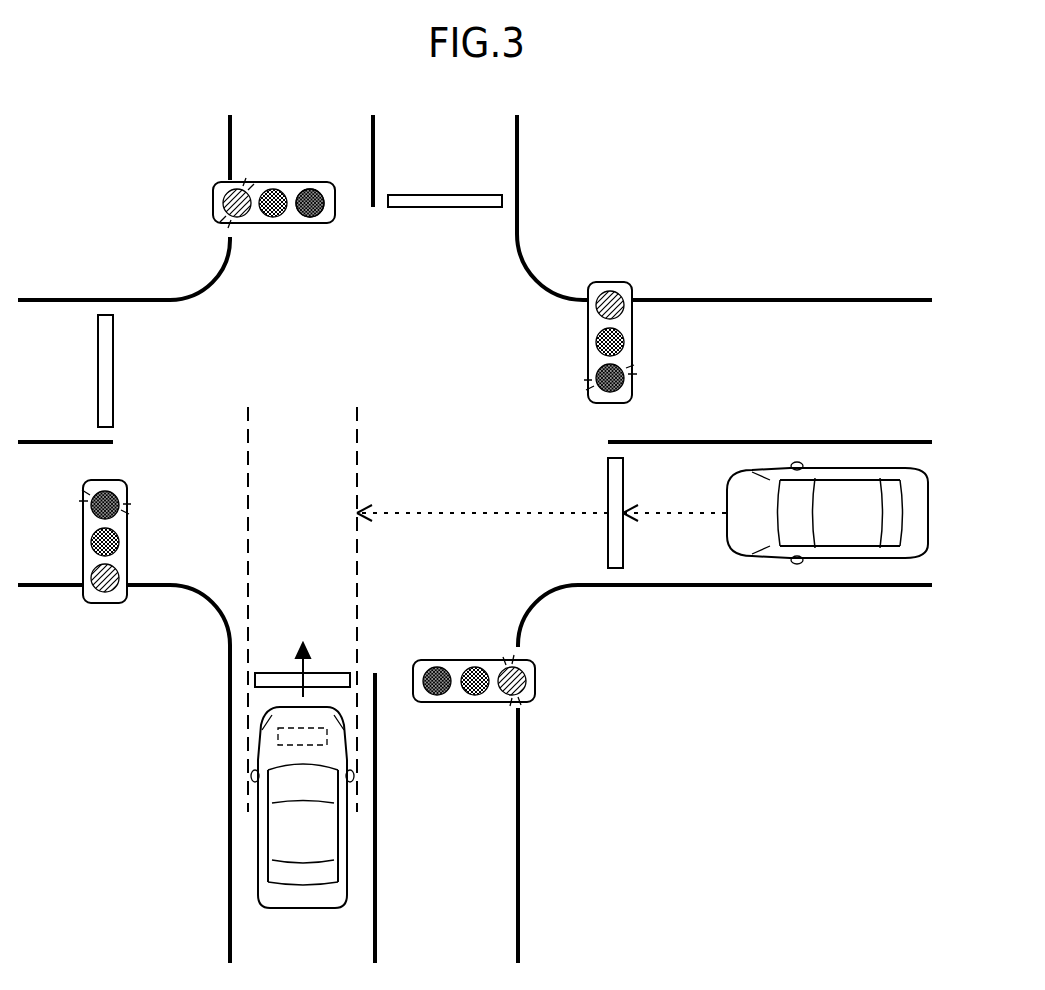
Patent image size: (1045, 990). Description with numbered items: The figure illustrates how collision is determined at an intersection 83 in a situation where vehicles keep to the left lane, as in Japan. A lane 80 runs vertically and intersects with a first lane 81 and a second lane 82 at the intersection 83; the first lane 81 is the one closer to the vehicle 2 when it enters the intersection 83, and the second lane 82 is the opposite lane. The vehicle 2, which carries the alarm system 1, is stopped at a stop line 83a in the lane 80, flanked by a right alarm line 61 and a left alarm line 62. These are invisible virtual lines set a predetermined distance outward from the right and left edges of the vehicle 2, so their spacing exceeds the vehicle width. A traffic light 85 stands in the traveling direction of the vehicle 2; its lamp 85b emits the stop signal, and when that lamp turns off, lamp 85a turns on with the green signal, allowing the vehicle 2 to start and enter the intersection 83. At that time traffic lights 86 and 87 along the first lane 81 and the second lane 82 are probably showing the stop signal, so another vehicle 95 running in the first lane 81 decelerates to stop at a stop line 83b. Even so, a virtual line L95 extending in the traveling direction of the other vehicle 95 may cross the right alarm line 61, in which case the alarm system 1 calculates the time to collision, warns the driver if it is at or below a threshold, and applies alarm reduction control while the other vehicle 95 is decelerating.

The alarm system 1 is at (278, 733).
The vehicle 2 is at (258, 825).
The right alarm line 61 is at (357, 595).
The left alarm line 62 is at (246, 620).
The lane 80 is at (265, 950).
The first lane 81 is at (912, 585).
The second lane 82 is at (822, 330).
The intersection 83 is at (432, 392).
The stop line 83a is at (268, 687).
The stop line 83b is at (623, 552).
The traffic light 85 is at (270, 182).
The lamp 85a is at (222, 206).
The lamp 85b is at (323, 205).
The traffic light 86 is at (105, 603).
The traffic light 87 is at (614, 282).
The other vehicle 95 is at (763, 558).
The virtual line L95 is at (512, 513).